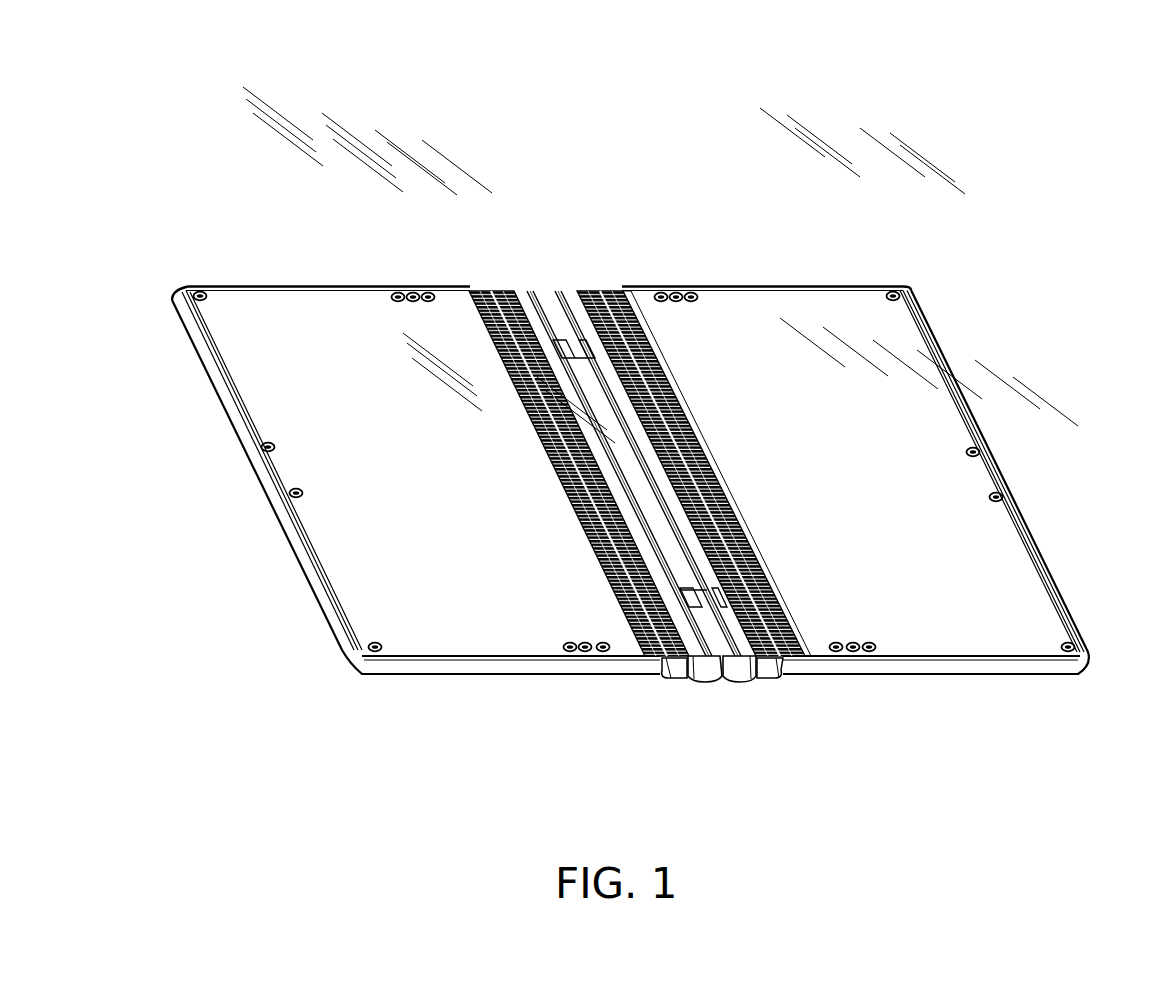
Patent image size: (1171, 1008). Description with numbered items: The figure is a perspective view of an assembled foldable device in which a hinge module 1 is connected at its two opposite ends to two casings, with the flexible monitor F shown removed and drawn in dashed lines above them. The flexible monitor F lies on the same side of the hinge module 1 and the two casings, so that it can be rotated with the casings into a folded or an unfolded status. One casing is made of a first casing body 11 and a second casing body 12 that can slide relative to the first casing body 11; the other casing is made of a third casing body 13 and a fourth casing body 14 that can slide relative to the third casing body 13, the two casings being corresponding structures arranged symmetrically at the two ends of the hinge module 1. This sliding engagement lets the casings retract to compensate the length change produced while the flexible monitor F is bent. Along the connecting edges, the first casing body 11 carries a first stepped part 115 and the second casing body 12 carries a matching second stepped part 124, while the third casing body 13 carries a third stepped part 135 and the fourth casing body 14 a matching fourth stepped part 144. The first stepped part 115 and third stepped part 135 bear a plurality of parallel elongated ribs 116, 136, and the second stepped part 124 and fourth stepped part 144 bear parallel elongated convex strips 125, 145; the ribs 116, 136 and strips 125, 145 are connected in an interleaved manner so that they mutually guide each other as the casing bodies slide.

The hinge module 1 is at (662, 488).
The flexible monitor F is at (942, 135).
The first casing body 11 is at (700, 673).
The second casing body 12 is at (343, 631).
The third casing body 13 is at (741, 673).
The fourth casing body 14 is at (1062, 598).
The first stepped part 115 is at (653, 736).
The elongated ribs 116 is at (674, 664).
The second stepped part 124 is at (579, 507).
The elongated convex strips 125 is at (645, 650).
The third stepped part 135 is at (807, 736).
The elongated ribs 136 is at (770, 665).
The fourth stepped part 144 is at (764, 507).
The elongated convex strips 145 is at (808, 652).